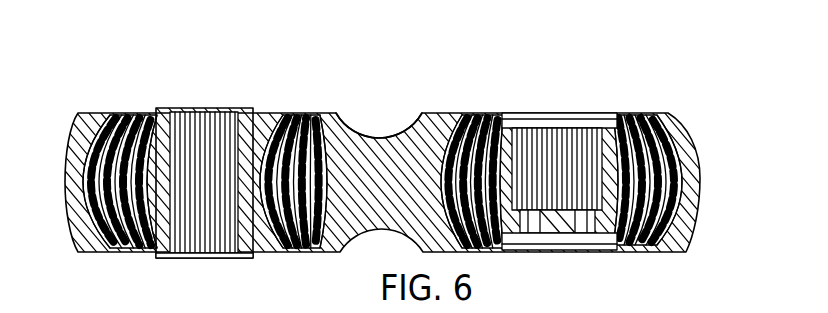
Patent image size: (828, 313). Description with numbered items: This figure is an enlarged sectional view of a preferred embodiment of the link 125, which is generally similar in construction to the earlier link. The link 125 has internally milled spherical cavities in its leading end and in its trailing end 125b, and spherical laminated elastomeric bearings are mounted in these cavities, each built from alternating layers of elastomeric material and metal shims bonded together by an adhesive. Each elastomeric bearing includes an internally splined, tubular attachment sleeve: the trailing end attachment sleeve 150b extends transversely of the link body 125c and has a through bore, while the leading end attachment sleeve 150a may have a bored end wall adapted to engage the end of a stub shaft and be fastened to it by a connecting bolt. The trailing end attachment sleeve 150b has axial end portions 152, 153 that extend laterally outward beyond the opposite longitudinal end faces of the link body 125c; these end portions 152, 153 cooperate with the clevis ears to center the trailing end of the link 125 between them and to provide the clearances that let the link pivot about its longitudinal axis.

The link 125 is at (412, 164).
The trailing end 125b is at (690, 128).
The link body 125c is at (400, 133).
The leading end attachment sleeve 150a is at (557, 127).
The trailing end attachment sleeve 150b is at (190, 108).
The axial end portion 152 is at (205, 108).
The axial end portion 153 is at (200, 258).